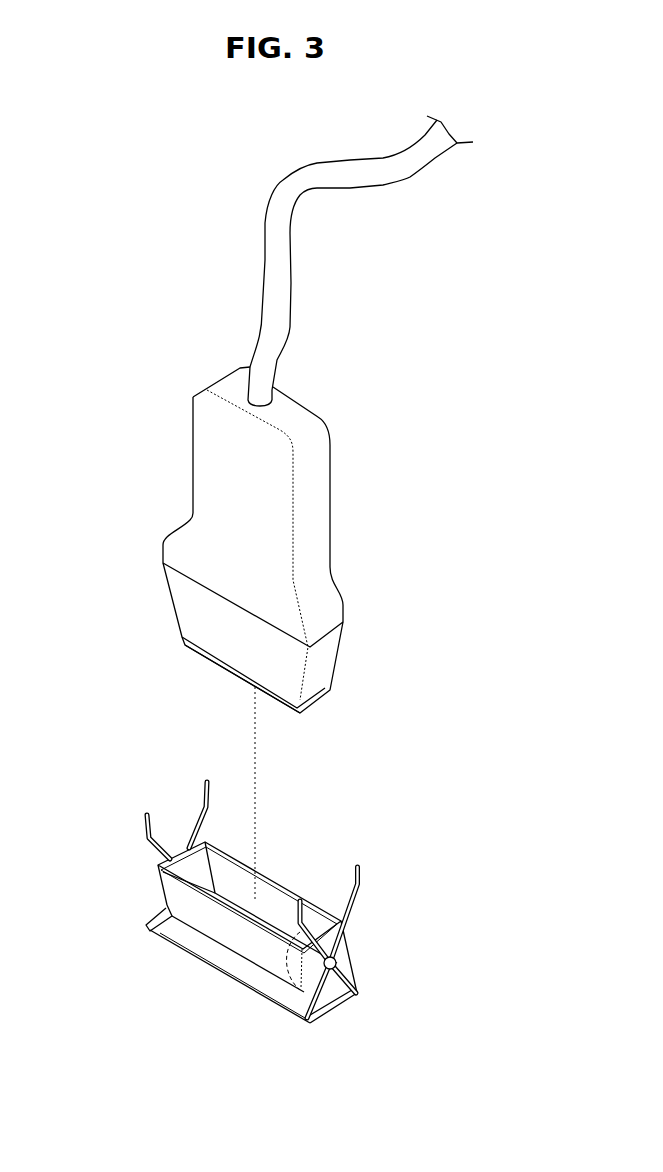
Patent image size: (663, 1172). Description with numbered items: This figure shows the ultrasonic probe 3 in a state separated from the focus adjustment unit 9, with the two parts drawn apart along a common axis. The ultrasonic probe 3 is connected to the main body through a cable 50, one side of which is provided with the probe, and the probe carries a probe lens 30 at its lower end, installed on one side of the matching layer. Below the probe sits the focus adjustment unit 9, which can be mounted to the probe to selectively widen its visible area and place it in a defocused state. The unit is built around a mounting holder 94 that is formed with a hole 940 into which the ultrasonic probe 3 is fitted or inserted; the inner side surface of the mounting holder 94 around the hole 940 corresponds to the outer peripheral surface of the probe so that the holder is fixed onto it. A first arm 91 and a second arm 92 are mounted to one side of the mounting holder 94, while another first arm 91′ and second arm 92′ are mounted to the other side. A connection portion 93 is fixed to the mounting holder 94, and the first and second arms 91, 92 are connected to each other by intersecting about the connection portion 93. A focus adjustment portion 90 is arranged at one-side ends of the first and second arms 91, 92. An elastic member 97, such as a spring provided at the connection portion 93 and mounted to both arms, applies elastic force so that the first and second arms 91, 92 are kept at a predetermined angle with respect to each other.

The ultrasonic probe 3 is at (315, 432).
The cable 50 is at (278, 236).
The probe lens 30 is at (184, 644).
The focus adjustment unit 9 is at (241, 910).
The focus adjustment portion 90 is at (243, 970).
The first arm 91 is at (361, 900).
The first arm 91′ is at (200, 807).
The second arm 92 is at (287, 1013).
The second arm 92′ is at (143, 839).
The connection portion 93 is at (325, 1020).
The mounting holder 94 is at (218, 928).
The hole 940 is at (282, 903).
The elastic member 97 is at (340, 963).